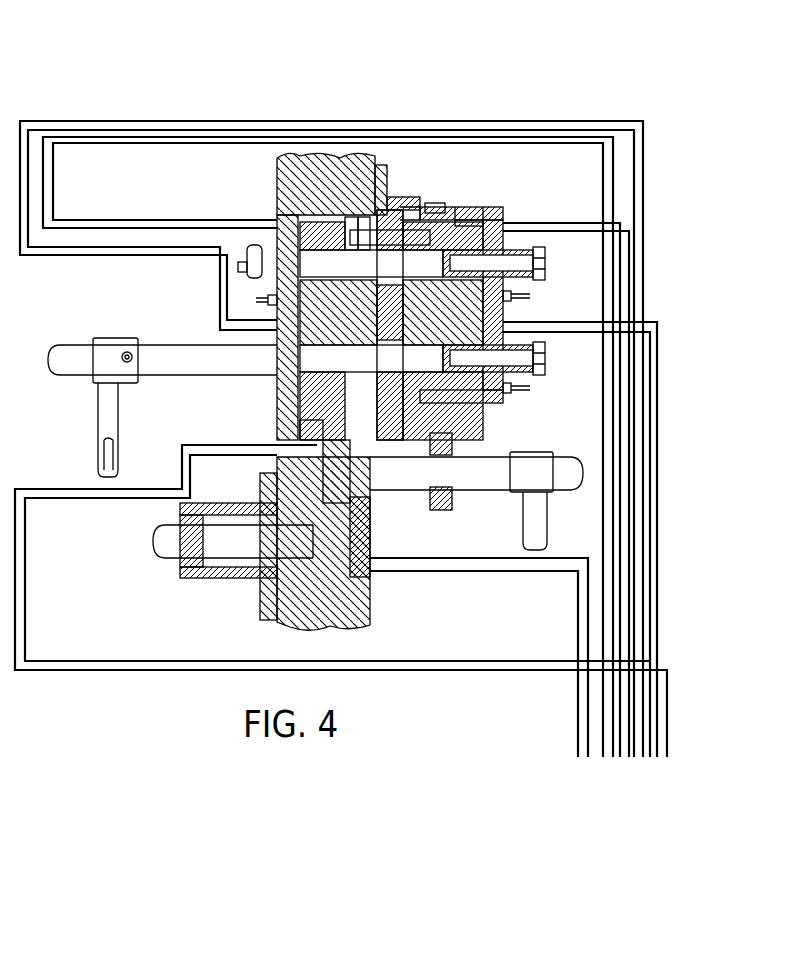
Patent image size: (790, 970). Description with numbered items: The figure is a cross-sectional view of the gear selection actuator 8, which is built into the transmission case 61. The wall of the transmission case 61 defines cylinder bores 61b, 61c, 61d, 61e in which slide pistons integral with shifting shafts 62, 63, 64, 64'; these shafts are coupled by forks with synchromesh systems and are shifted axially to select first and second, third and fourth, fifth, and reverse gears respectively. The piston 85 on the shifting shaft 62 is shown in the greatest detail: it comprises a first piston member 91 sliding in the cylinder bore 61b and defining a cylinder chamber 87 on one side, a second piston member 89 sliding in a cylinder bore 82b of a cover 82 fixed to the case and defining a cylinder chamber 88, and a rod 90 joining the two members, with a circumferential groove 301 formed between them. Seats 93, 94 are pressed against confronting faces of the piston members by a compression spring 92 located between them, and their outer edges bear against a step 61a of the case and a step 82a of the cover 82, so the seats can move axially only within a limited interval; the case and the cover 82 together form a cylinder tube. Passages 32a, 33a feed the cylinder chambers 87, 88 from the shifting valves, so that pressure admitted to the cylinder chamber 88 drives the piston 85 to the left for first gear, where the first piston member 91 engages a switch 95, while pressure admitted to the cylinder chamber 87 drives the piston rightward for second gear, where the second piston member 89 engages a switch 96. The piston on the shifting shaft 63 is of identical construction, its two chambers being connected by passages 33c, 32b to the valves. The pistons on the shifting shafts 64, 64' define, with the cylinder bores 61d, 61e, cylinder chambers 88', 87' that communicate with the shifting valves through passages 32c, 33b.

The piston 85 is at (413, 48).
The rod 90 is at (353, 217).
The first piston member 91 is at (358, 210).
The second piston member 89 is at (433, 205).
The cylinder bore 61b is at (310, 215).
The seat 93 is at (367, 213).
The step 61a is at (388, 200).
The cylinder bore 82b is at (465, 217).
The cylinder chamber 87 is at (248, 301).
The shifting shaft 62 is at (257, 245).
The seat 94 is at (397, 208).
The step 82a is at (410, 212).
The cylinder chamber 88 is at (470, 301).
The cover 82 is at (507, 219).
The circumferential groove 301 is at (247, 268).
The switch 95 is at (268, 301).
The shifting shaft 63 is at (172, 345).
The compression spring 92 is at (513, 242).
The switch 96 is at (513, 296).
The gear selection actuator 8 is at (591, 386).
The cylinder bore 61c is at (287, 407).
The cylinder chamber 87' is at (258, 426).
The shifting shaft 64' is at (506, 481).
The cylinder bore 61e is at (434, 518).
The cylinder chamber 88' is at (385, 537).
The shifting shaft 64 is at (225, 563).
The cylinder bore 61d is at (275, 597).
The transmission case 61 is at (365, 612).
The passage 32c is at (583, 757).
The passage 32a is at (605, 757).
The passage 33a is at (622, 757).
The passage 33c is at (638, 757).
The passage 32b is at (648, 757).
The passage 33b is at (660, 757).